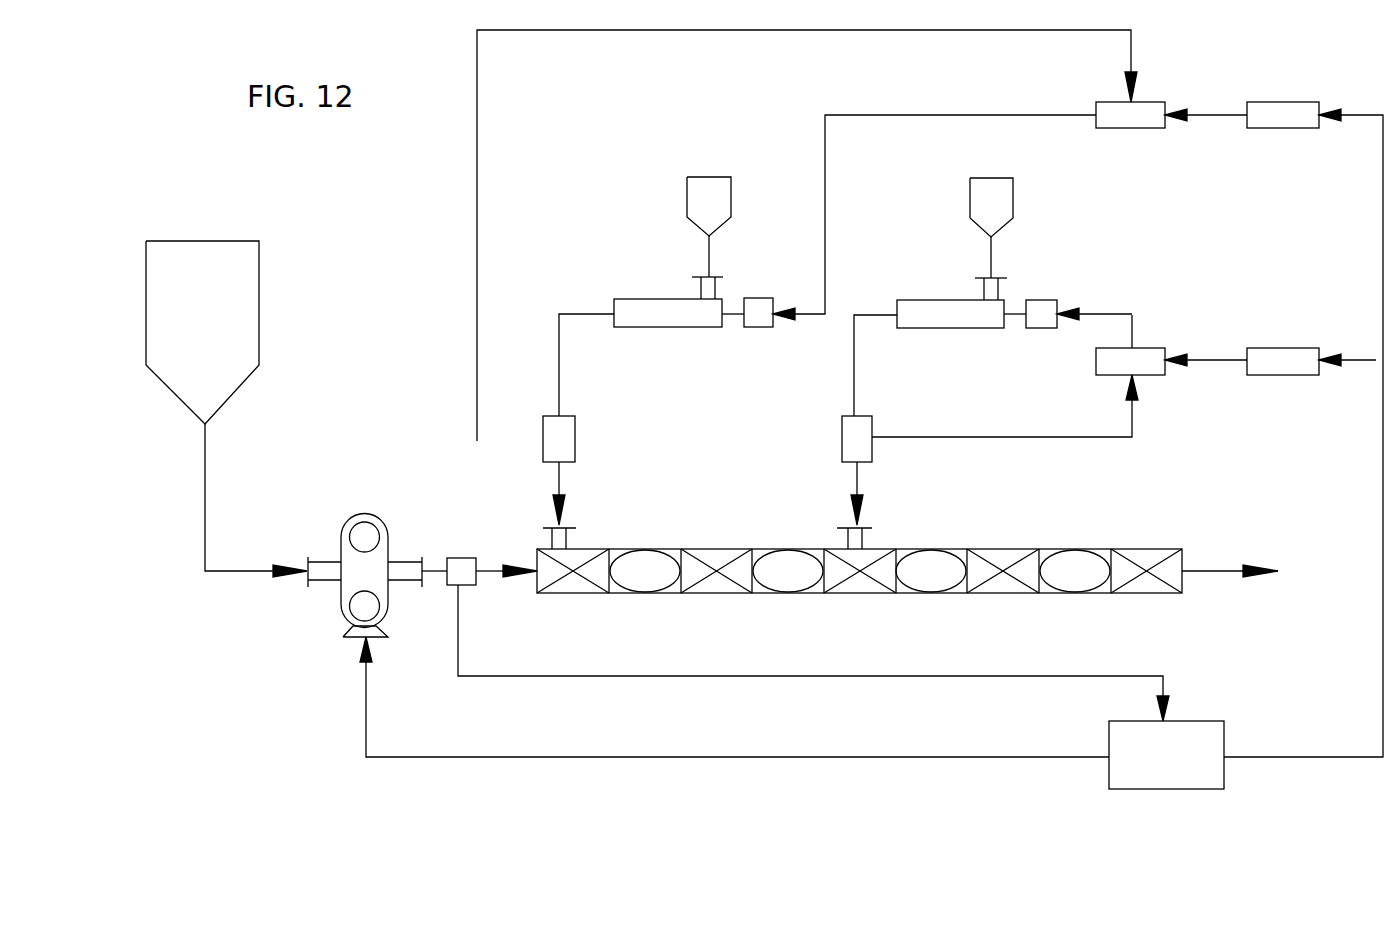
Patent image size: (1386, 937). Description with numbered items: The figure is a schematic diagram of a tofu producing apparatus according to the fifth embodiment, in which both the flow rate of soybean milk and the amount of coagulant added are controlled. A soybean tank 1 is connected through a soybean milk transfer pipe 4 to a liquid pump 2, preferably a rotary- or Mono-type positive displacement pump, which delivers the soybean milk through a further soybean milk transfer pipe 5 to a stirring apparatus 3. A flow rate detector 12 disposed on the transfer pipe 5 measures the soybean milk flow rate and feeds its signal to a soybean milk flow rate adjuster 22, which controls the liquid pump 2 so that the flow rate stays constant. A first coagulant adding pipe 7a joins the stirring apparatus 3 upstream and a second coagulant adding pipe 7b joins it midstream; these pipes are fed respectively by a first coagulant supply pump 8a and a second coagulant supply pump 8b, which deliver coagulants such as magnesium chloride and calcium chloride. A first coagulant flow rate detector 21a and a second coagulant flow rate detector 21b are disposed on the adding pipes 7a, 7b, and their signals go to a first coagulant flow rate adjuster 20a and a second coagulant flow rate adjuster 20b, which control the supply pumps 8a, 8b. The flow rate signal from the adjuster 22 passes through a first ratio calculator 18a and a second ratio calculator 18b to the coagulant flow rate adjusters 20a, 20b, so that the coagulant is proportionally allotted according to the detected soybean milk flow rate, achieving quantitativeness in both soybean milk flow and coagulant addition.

The soybean tank 1 is at (259, 300).
The liquid pump 2 is at (363, 513).
The stirring apparatus 3 is at (927, 615).
The soybean milk transfer pipe 4 is at (232, 573).
The soybean milk transfer pipe 5 is at (435, 572).
The first coagulant adding pipe 7a is at (559, 364).
The second coagulant adding pipe 7b is at (854, 370).
The first coagulant supply pump 8a is at (638, 298).
The second coagulant supply pump 8b is at (921, 300).
The flow rate detector 12 is at (458, 557).
The first ratio calculator 18a is at (1280, 128).
The second ratio calculator 18b is at (1288, 348).
The first coagulant flow rate adjuster 20a is at (1123, 128).
The second coagulant flow rate adjuster 20b is at (1148, 347).
The first coagulant flow rate detector 21a is at (575, 438).
The second coagulant flow rate detector 21b is at (872, 457).
The soybean milk flow rate adjuster 22 is at (1168, 789).